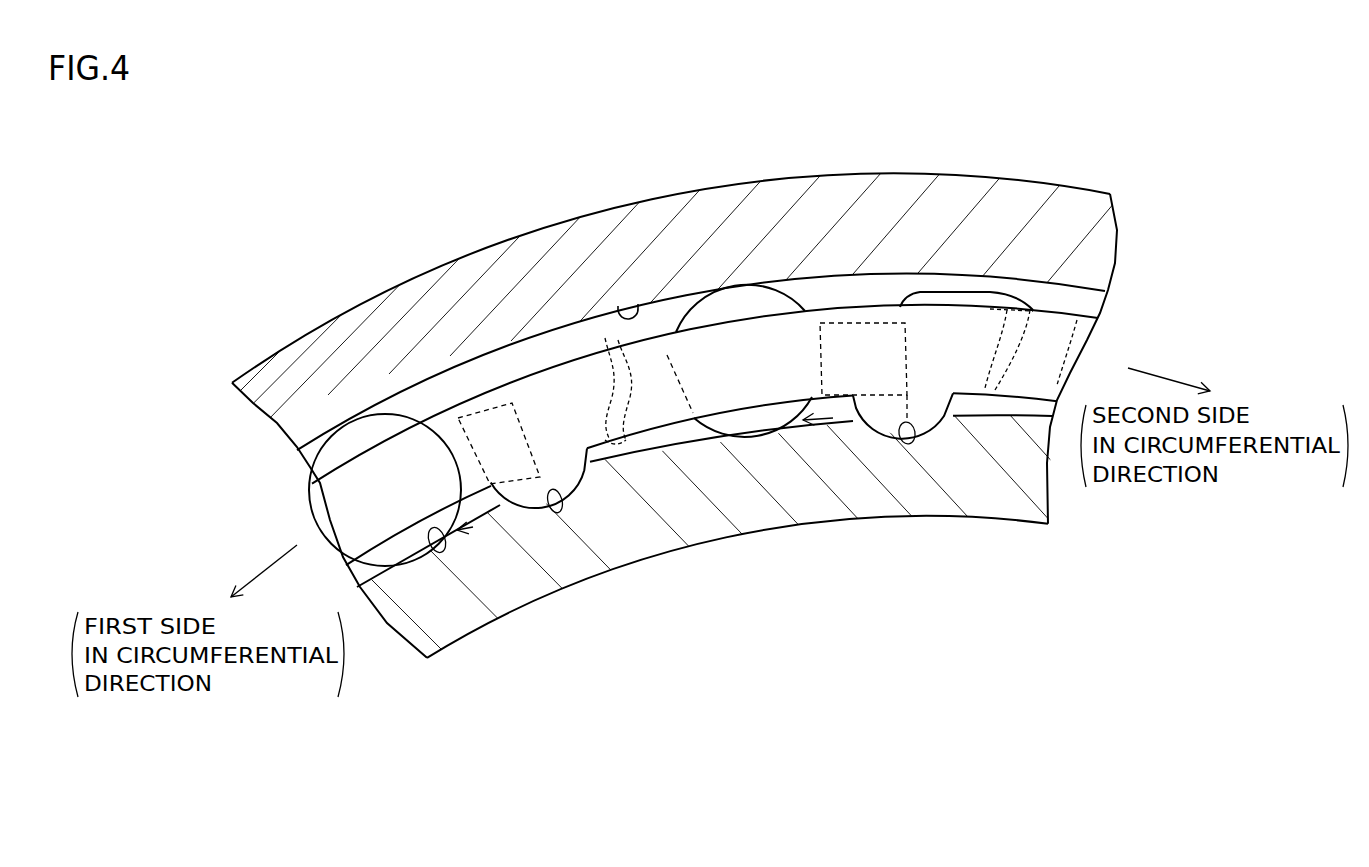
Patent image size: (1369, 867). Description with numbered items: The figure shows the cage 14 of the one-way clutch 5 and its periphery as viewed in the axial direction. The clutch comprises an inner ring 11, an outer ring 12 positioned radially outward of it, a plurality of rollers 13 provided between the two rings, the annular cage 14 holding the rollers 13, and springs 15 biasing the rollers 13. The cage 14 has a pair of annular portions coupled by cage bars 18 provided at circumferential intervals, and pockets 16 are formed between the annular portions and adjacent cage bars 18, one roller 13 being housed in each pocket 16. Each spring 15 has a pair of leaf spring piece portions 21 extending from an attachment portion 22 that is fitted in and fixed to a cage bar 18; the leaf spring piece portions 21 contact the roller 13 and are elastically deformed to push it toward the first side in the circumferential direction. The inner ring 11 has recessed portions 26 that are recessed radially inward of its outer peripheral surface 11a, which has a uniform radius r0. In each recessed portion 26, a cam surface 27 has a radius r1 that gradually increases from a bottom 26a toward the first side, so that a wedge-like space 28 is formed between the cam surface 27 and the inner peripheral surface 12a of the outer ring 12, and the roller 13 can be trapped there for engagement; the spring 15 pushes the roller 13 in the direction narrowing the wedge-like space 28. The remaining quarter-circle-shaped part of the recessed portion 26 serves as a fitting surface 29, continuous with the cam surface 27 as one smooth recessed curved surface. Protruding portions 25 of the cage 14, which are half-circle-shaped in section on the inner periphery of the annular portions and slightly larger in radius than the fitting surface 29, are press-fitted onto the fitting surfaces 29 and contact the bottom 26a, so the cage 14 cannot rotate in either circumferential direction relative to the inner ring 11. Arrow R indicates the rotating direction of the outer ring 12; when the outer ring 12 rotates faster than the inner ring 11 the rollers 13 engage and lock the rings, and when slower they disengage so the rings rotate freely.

The one-way clutch 5 is at (992, 288).
The inner ring 11 is at (697, 493).
The outer peripheral surface of the inner ring 11a is at (637, 446).
The outer ring 12 is at (460, 296).
The inner peripheral surface of the outer ring 12a is at (618, 306).
The roller 13 is at (350, 445).
The cage 14 is at (462, 414).
The spring 15 is at (446, 412).
The pocket 16 is at (663, 346).
The cage bar 18 is at (560, 463).
The leaf spring piece portion 21 is at (457, 500).
The attachment portion 22 is at (477, 390).
The protruding portion 25 is at (588, 468).
The recessed portion 26 is at (482, 525).
The bottom of the recessed portion 26a is at (560, 500).
The cam surface 27 is at (445, 553).
The wedge-like space 28 is at (490, 505).
The fitting surface 29 is at (553, 513).
The uniform radius r0 is at (652, 458).
The increasing radius r1 is at (708, 446).
The rotating direction of the outer ring R is at (263, 318).